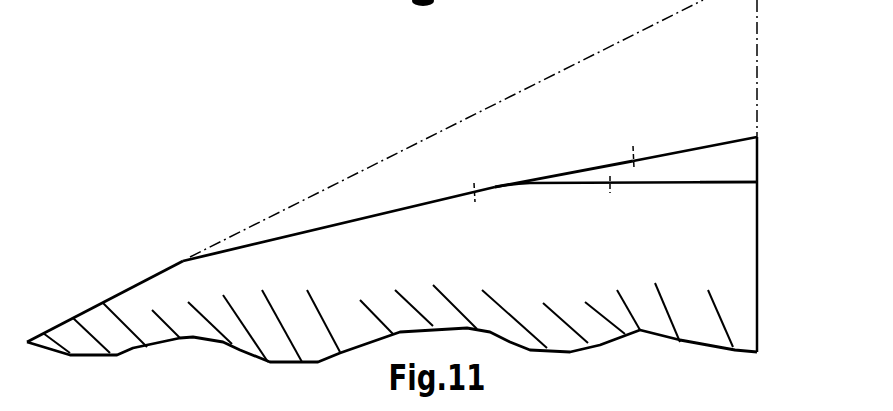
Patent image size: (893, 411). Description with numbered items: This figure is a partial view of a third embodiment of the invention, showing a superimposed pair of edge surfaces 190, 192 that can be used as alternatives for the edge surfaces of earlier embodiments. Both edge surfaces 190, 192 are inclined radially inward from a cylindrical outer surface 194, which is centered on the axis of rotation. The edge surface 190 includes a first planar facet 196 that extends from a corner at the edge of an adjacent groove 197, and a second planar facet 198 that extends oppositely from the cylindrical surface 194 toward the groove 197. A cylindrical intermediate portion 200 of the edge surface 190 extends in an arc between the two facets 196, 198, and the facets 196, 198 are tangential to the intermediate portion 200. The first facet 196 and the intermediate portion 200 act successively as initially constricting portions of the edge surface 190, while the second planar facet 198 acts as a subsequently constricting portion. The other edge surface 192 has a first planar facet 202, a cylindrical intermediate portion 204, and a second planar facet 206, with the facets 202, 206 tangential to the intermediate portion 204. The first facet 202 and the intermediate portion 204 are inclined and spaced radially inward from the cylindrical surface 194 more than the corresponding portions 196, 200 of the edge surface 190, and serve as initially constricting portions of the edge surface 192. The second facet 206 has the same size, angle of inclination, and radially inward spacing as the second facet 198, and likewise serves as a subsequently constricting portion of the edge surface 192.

The edge surface 190 is at (733, 125).
The edge surface 192 is at (731, 175).
The cylindrical outer surface 194 is at (115, 297).
The first planar facet 196 is at (700, 148).
The groove 197 is at (770, 244).
The second planar facet 198 is at (352, 220).
The cylindrical intermediate portion 200 is at (558, 172).
The first planar facet 202 is at (688, 182).
The cylindrical intermediate portion 204 is at (546, 183).
The second planar facet 206 is at (418, 205).